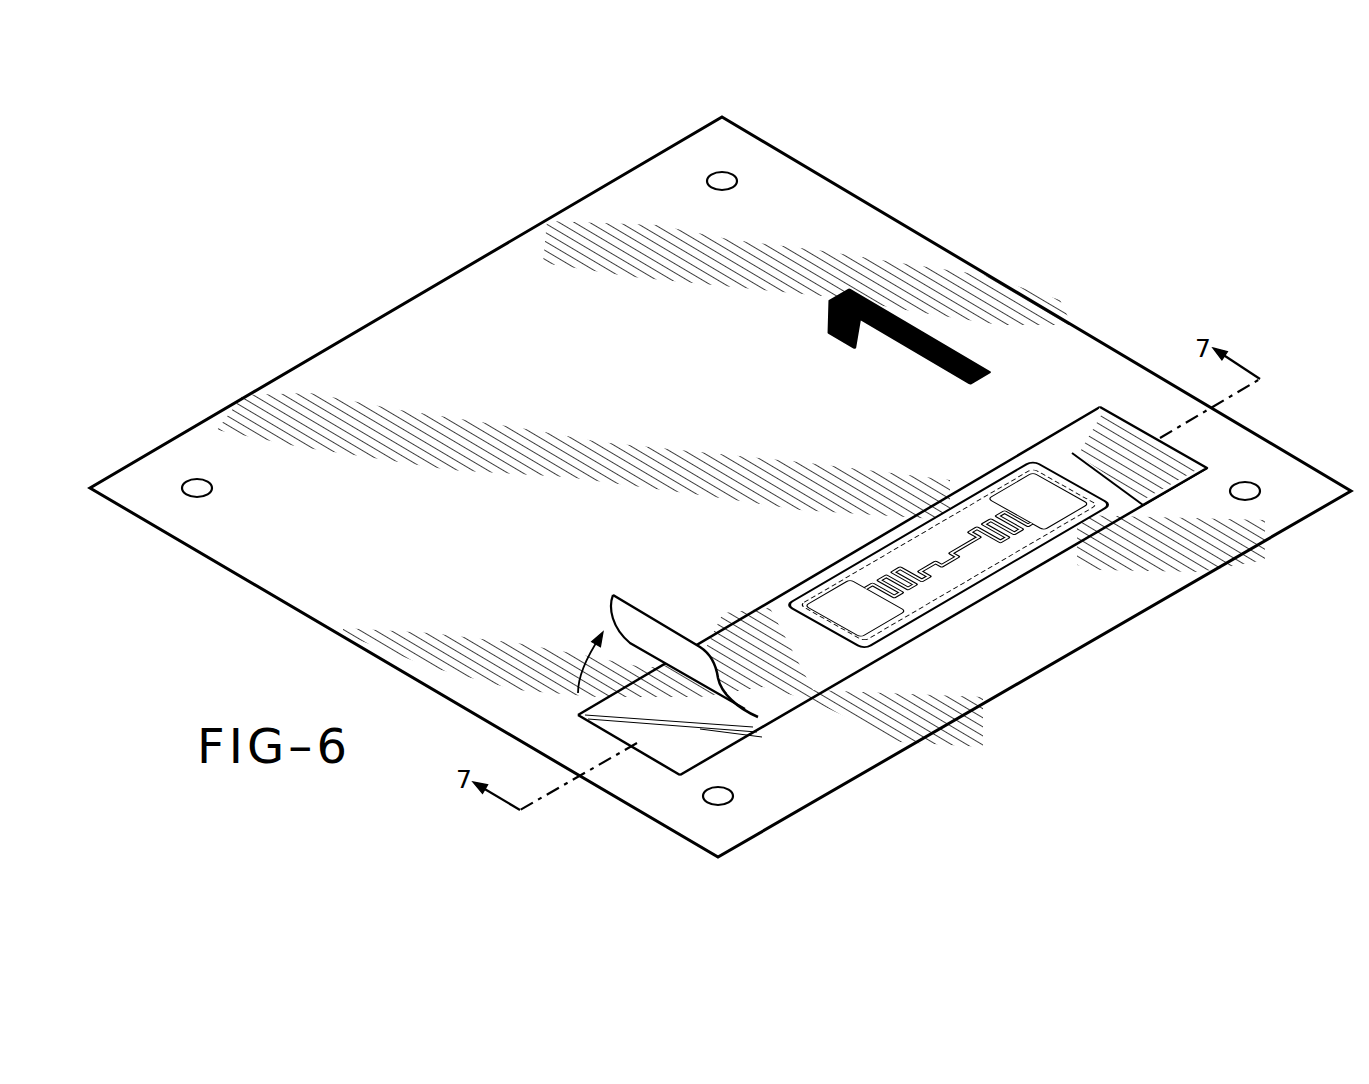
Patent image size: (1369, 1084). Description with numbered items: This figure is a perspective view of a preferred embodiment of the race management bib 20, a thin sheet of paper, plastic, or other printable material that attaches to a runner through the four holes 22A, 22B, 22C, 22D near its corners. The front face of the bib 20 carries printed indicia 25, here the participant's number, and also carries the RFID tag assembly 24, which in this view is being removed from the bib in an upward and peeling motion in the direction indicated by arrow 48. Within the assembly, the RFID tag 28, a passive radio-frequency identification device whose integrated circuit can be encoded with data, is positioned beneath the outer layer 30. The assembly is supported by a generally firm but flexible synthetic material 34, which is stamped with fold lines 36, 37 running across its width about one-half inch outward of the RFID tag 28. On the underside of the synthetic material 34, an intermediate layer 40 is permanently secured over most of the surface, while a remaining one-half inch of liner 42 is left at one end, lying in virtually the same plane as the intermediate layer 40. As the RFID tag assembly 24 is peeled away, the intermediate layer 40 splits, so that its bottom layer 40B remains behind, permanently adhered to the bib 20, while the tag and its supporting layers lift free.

The bib 20 is at (396, 276).
The hole 22A is at (194, 480).
The hole 22B is at (716, 178).
The hole 22C is at (717, 800).
The hole 22D is at (1247, 487).
The RFID tag assembly 24 is at (863, 620).
The indicia 25 is at (640, 423).
The RFID tag 28 is at (1023, 491).
The outer layer 30 is at (948, 539).
The synthetic material 34 is at (1099, 436).
The fold line 36 is at (777, 630).
The fold line 37 is at (1093, 427).
The intermediate layer 40 is at (750, 748).
The bottom layer 40B is at (670, 748).
The liner 42 is at (650, 633).
The arrow 48 is at (580, 662).